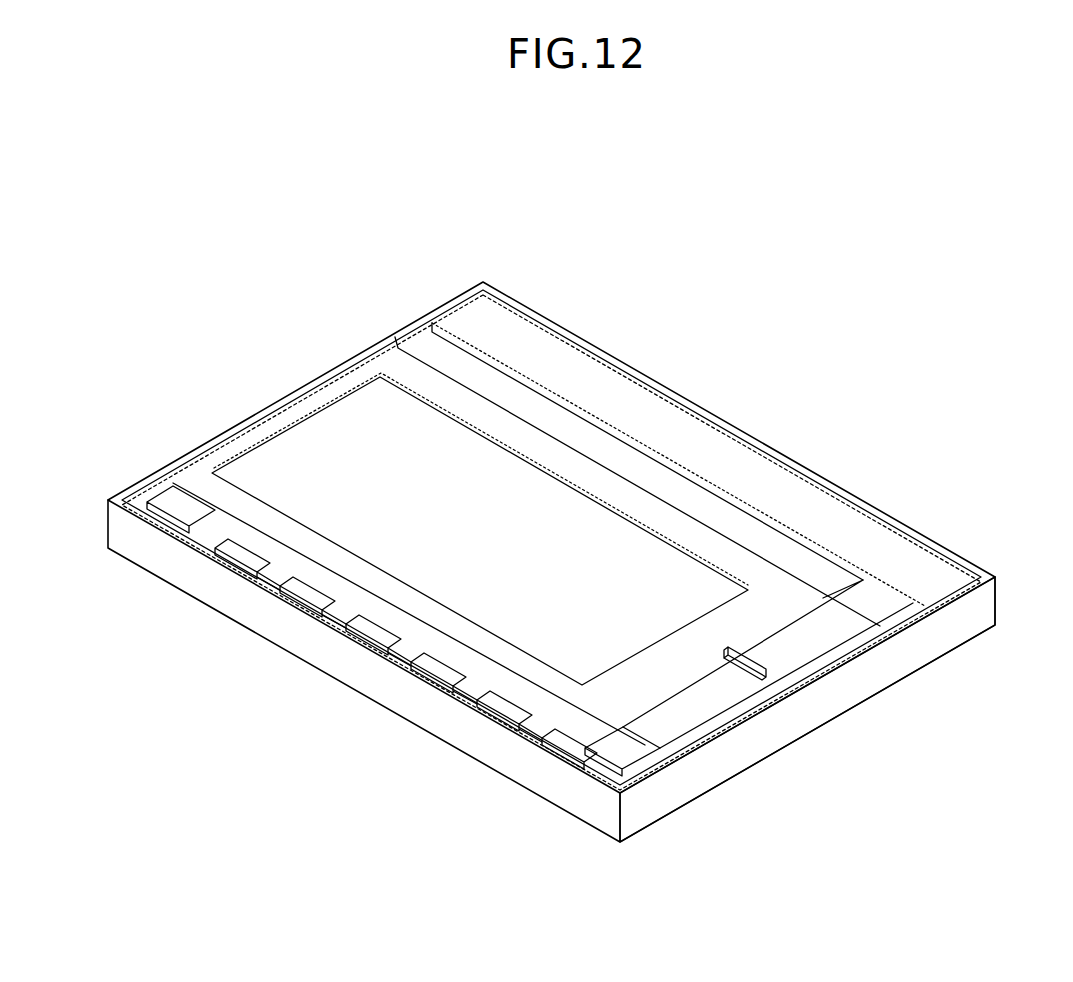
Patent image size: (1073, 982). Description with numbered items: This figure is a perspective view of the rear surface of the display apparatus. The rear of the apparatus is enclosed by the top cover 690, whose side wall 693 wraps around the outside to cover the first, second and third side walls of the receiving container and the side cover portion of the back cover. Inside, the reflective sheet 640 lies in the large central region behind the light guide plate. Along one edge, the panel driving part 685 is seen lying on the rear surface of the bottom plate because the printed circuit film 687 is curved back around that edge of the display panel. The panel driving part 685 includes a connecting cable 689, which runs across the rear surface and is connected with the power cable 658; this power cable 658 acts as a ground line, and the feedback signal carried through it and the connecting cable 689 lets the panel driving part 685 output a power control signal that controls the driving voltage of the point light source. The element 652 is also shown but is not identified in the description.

The reflective sheet 640 is at (293, 453).
The guide rail 652 is at (678, 420).
The power cable 658 is at (777, 648).
The panel driving part 685 is at (200, 543).
The printed circuit film 687 is at (392, 600).
The connecting cable 689 is at (683, 698).
The top cover 690 is at (273, 646).
The side wall 693 is at (935, 635).